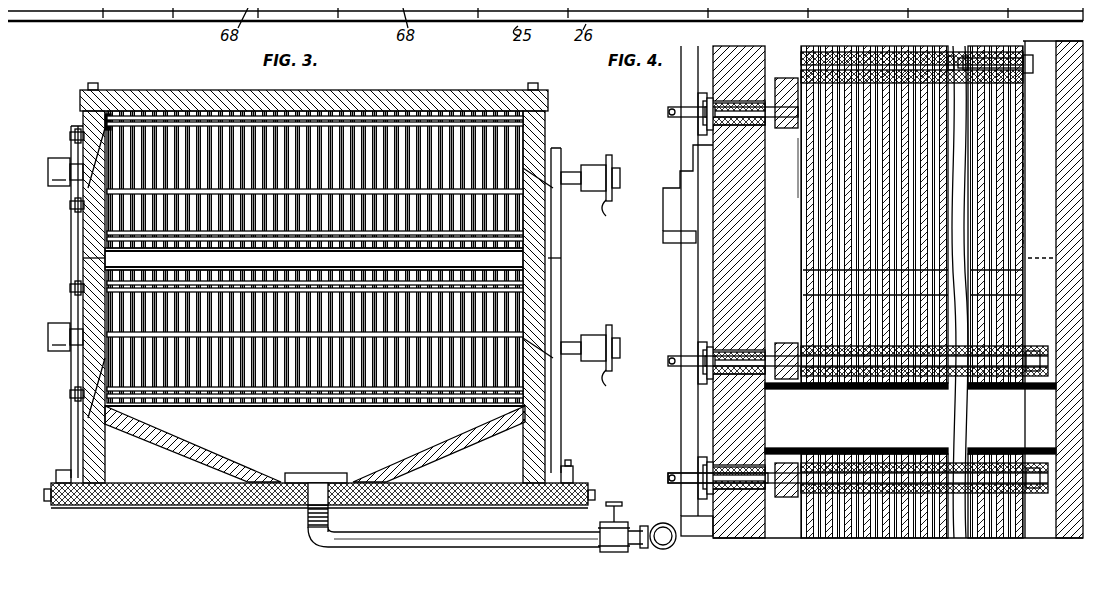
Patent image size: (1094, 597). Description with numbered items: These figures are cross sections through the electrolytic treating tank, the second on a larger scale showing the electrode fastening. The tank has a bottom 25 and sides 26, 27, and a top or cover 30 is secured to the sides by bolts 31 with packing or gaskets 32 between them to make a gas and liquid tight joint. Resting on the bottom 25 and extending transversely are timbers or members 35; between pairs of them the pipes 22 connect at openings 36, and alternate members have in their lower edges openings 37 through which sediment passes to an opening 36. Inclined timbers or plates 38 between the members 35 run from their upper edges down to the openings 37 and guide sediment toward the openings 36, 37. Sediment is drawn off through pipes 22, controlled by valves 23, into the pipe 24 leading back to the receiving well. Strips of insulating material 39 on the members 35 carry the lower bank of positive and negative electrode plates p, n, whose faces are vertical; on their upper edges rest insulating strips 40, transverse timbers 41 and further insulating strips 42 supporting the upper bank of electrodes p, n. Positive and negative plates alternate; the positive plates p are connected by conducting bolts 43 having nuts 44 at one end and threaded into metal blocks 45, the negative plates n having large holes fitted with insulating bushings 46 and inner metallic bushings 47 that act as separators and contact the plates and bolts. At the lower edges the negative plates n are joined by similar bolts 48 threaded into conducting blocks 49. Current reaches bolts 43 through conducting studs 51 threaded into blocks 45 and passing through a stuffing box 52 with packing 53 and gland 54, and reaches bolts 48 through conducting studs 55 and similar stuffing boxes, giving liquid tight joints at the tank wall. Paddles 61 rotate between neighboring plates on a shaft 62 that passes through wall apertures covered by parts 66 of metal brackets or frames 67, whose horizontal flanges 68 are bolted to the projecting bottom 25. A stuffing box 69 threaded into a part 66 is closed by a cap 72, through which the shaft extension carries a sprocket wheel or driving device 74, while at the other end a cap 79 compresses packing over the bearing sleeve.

In FIG. 3, the pipe 22 is at (436, 528).
In FIG. 3, the valve 23 is at (603, 492).
In FIG. 3, the pipe 24 is at (655, 514).
In FIG. 3, the bottom 25 is at (206, 490).
In FIG. 3, the side 26 is at (543, 250).
In FIG. 4, the side 26 is at (1039, 179).
In FIG. 3, the side 27 is at (85, 250).
In FIG. 4, the side 27 is at (712, 282).
In FIG. 3, the top or cover 30 is at (410, 92).
In FIG. 3, the bolt 31 is at (530, 76).
In FIG. 3, the packing or gasket 32 is at (540, 106).
In FIG. 3, the timber or member 35 is at (275, 421).
In FIG. 3, the opening 36 is at (300, 500).
In FIG. 3, the opening 37 is at (300, 465).
In FIG. 3, the timber or plate 38 is at (418, 440).
In FIG. 3, the strip of insulating material 39 is at (520, 392).
In FIG. 3, the strip of insulating material 40 is at (515, 250).
In FIG. 4, the strip of insulating material 40 is at (990, 440).
In FIG. 3, the transverse timber or strip 41 is at (315, 189).
In FIG. 4, the transverse timber or strip 41 is at (912, 237).
In FIG. 3, the strip of insulating material 42 is at (315, 326).
In FIG. 4, the strip of insulating material 42 is at (903, 380).
In FIG. 4, the conducting bolt 43 is at (958, 50).
In FIG. 3, the nut 44 is at (512, 88).
In FIG. 4, the nut 44 is at (1028, 446).
In FIG. 3, the metal block 45 is at (75, 116).
In FIG. 4, the metal block 45 is at (780, 440).
In FIG. 4, the insulating bushing 46 is at (1022, 36).
In FIG. 4, the metallic bushing 47 is at (852, 380).
In FIG. 4, the bolt 48 is at (958, 390).
In FIG. 4, the conducting block 49 is at (770, 335).
In FIG. 3, the conducting stud 51 is at (62, 280).
In FIG. 4, the conducting stud 51 is at (662, 470).
In FIG. 4, the stuffing box 52 is at (700, 446).
In FIG. 4, the packing 53 is at (700, 392).
In FIG. 4, the gland 54 is at (697, 456).
In FIG. 3, the conducting stud 55 is at (62, 386).
In FIG. 4, the conducting stud 55 is at (662, 358).
In FIG. 4, the paddle 61 is at (802, 256).
In FIG. 3, the shaft 62 is at (520, 345).
In FIG. 4, the shaft 62 is at (773, 192).
In FIG. 3, the part 66 is at (556, 340).
In FIG. 4, the part 66 is at (672, 162).
In FIG. 3, the metal bracket or frame 67 is at (553, 425).
In FIG. 4, the metal bracket or frame 67 is at (673, 252).
In FIG. 3, the horizontal flange 68 is at (566, 462).
In FIG. 3, the stuffing box 69 is at (560, 322).
In FIG. 3, the cap 72 is at (586, 318).
In FIG. 3, the sprocket wheel or driving device 74 is at (602, 368).
In FIG. 3, the cap 79 is at (40, 330).
In FIG. 3, the negative electrode plate n is at (166, 106).
In FIG. 4, the negative electrode plate n is at (805, 530).
In FIG. 3, the positive electrode plate p is at (515, 286).
In FIG. 4, the positive electrode plate p is at (1022, 492).